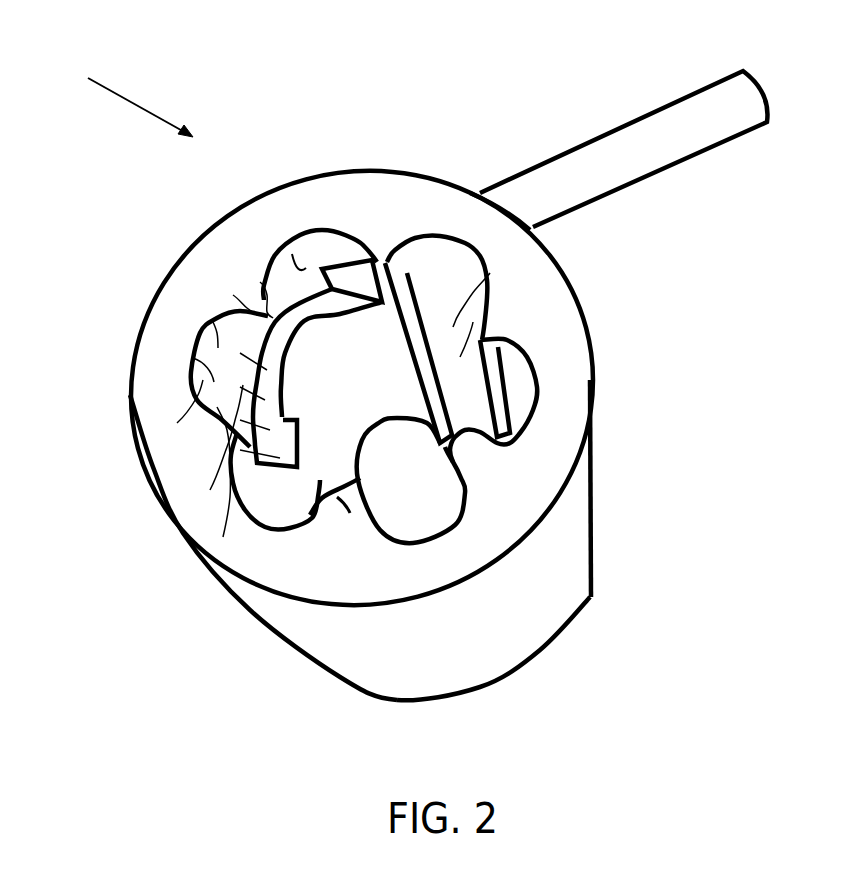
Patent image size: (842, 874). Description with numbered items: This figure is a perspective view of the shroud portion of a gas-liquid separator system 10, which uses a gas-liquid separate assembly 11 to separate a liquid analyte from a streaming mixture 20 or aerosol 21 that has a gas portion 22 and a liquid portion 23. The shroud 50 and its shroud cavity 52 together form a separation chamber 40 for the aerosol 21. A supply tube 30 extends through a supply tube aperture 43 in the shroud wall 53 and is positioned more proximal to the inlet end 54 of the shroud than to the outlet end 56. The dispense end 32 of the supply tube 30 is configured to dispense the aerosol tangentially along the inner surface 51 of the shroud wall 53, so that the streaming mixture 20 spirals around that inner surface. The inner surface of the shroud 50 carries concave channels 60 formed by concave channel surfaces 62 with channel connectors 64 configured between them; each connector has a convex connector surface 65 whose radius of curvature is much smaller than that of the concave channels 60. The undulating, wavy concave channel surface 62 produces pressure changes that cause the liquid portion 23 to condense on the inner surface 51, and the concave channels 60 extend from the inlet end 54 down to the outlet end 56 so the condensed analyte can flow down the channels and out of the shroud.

The gas-liquid separator system 10 is at (121, 100).
The gas-liquid separate assembly 11 is at (420, 203).
The streaming mixture 20 is at (220, 380).
The aerosol 21 is at (177, 423).
The gas portion 22 is at (210, 490).
The liquid portion 23 is at (223, 537).
The supply tube 30 is at (577, 167).
The dispense end 32 is at (316, 266).
The separation chamber 40 is at (493, 277).
The supply tube aperture 43 is at (363, 260).
The shroud 50 is at (587, 538).
The inner surface 51 is at (299, 262).
The shroud cavity 52 is at (580, 323).
The shroud wall 53 is at (597, 470).
The inlet end 54 is at (443, 195).
The outlet end 56 is at (580, 600).
The concave channels 60 is at (212, 320).
The concave channel surfaces 62 is at (193, 358).
The channel connectors 64 is at (260, 282).
The convex connector surface 65 is at (233, 295).